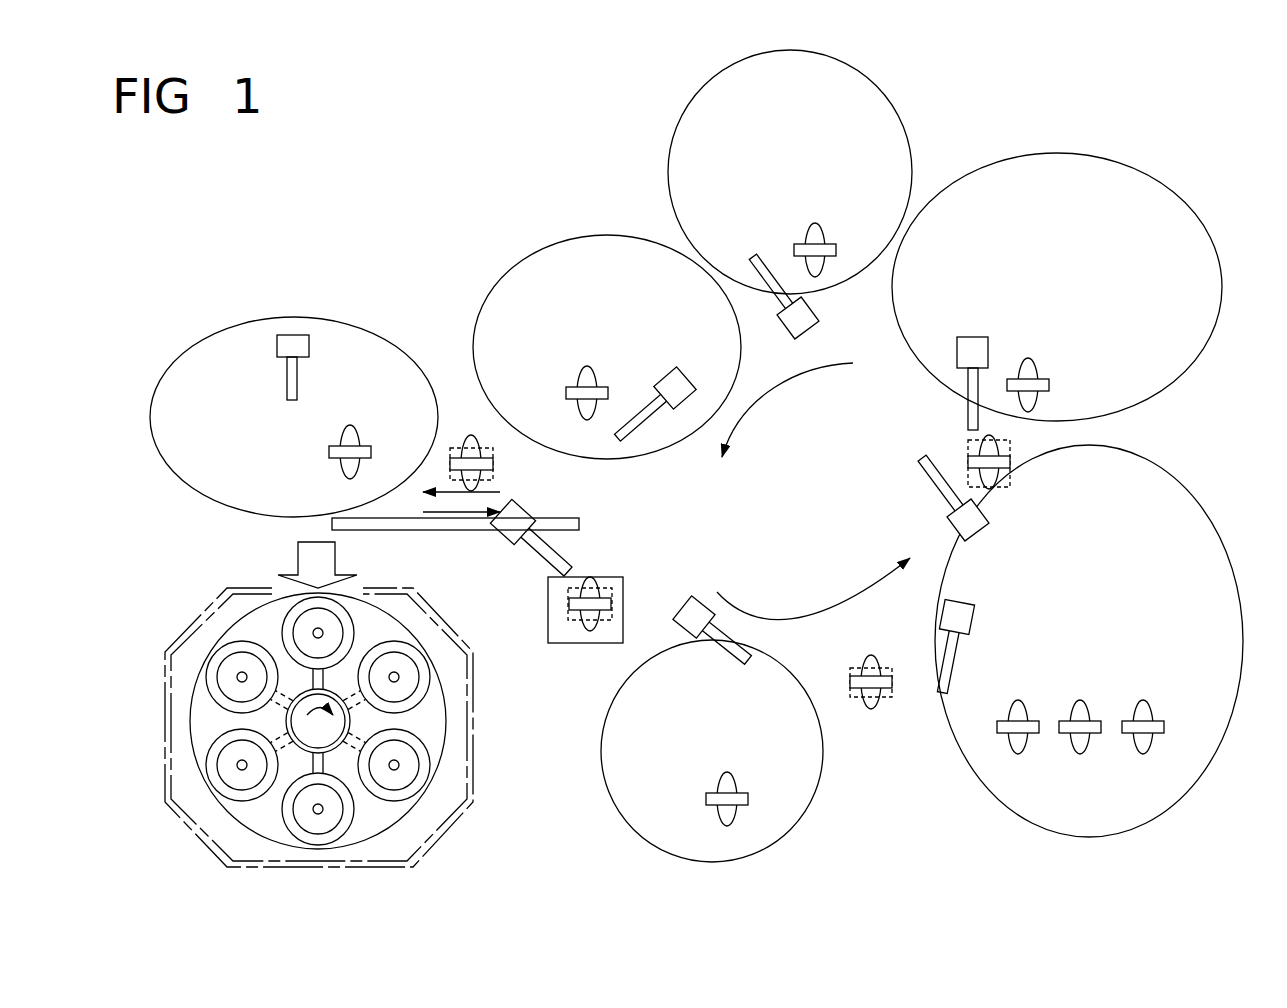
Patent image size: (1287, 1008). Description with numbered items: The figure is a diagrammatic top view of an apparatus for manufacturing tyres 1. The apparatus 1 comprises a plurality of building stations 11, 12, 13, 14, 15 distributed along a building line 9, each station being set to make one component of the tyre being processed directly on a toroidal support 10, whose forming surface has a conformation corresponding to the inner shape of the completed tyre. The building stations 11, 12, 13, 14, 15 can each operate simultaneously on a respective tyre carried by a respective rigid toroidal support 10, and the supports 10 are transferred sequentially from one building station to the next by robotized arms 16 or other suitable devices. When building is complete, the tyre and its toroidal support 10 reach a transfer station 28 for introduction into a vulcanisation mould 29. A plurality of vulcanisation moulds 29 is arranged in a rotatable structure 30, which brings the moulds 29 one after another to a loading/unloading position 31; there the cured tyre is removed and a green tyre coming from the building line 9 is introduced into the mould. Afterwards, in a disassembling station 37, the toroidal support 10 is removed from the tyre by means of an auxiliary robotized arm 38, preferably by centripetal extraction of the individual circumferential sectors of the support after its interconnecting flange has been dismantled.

The apparatus for manufacturing tyres 1 is at (430, 222).
The building line 9 is at (572, 712).
The toroidal support 10 is at (352, 425).
The building station 11 is at (820, 782).
The building station 12 is at (1205, 768).
The building station 13 is at (1165, 183).
The building station 14 is at (893, 102).
The building station 15 is at (565, 238).
The robotized arm 16 is at (675, 383).
The transfer station 28 is at (593, 514).
The vulcanisation mould 29 is at (412, 686).
The rotatable structure 30 is at (385, 825).
The loading/unloading position 31 is at (305, 557).
The disassembling station 37 is at (197, 343).
The auxiliary robotized arm 38 is at (295, 343).